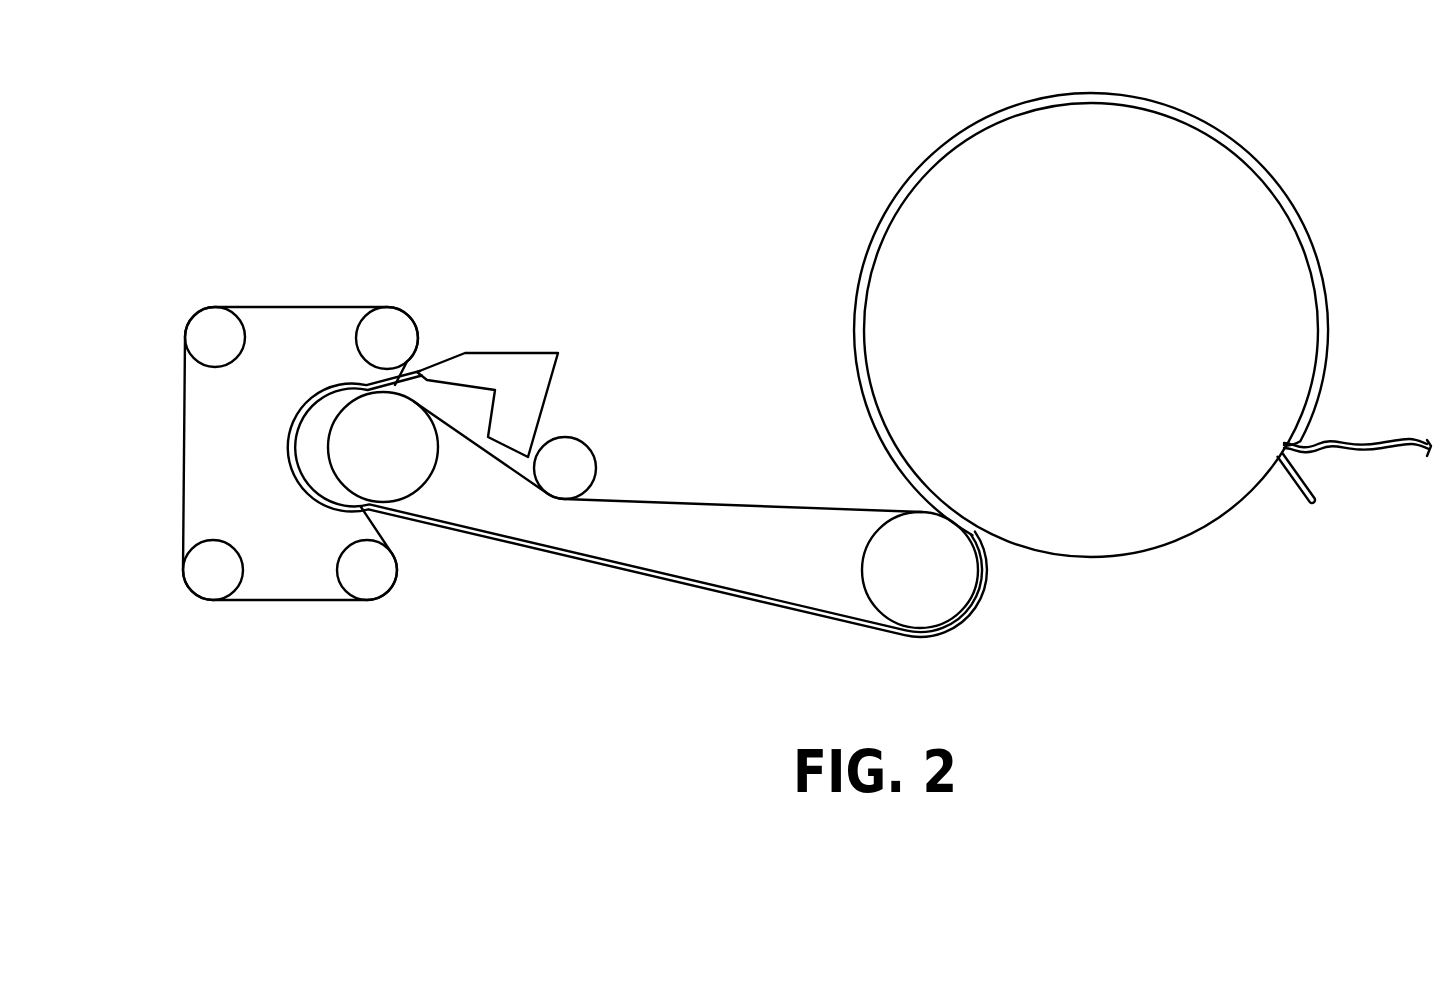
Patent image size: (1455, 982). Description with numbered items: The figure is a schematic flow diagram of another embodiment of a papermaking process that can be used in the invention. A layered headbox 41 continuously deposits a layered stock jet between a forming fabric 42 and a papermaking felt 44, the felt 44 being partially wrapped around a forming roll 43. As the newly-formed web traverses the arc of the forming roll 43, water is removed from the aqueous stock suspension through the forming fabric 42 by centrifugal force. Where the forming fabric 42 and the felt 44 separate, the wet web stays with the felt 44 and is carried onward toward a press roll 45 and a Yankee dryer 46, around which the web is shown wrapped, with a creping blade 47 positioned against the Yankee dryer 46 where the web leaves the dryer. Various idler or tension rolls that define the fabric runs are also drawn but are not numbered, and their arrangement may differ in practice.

The layered headbox 41 is at (538, 388).
The forming fabric 42 is at (312, 306).
The forming roll 43 is at (347, 453).
The papermaking felt 44 is at (713, 590).
The press roll 45 is at (952, 585).
The Yankee dryer 46 is at (1263, 223).
The creping blade 47 is at (1288, 487).